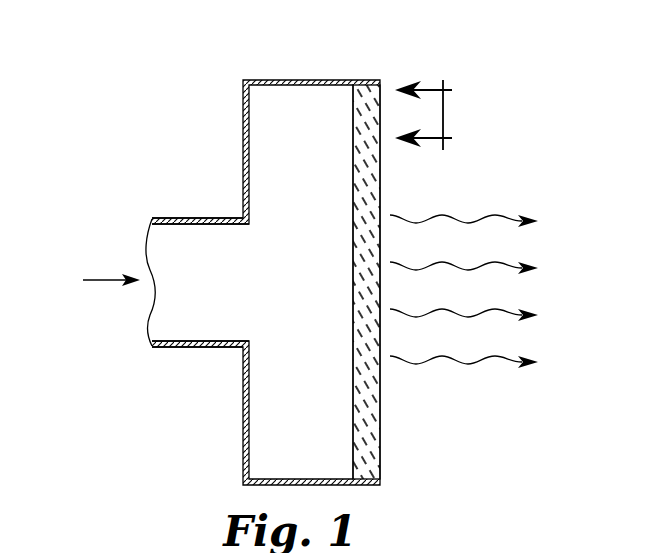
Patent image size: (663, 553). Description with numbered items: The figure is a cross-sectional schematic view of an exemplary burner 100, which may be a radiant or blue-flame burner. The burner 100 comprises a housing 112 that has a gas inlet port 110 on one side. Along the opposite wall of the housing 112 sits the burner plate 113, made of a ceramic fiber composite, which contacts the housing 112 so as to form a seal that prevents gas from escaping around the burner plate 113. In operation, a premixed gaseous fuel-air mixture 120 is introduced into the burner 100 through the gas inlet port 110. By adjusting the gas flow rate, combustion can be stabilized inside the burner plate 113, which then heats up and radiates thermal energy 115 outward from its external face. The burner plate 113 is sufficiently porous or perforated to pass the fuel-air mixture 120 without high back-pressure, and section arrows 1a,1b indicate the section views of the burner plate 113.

The burner 100 is at (278, 42).
The gas inlet port 110 is at (172, 218).
The housing 112 is at (243, 121).
The burner plate 113 is at (377, 449).
The thermal energy 115 is at (498, 212).
The premixed gaseous fuel-air mixture 120 is at (95, 280).
The section lines 1a,1b is at (423, 116).